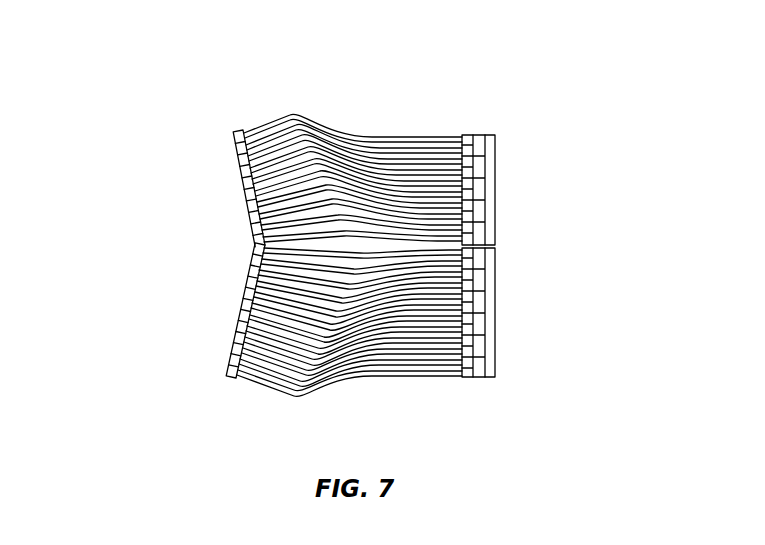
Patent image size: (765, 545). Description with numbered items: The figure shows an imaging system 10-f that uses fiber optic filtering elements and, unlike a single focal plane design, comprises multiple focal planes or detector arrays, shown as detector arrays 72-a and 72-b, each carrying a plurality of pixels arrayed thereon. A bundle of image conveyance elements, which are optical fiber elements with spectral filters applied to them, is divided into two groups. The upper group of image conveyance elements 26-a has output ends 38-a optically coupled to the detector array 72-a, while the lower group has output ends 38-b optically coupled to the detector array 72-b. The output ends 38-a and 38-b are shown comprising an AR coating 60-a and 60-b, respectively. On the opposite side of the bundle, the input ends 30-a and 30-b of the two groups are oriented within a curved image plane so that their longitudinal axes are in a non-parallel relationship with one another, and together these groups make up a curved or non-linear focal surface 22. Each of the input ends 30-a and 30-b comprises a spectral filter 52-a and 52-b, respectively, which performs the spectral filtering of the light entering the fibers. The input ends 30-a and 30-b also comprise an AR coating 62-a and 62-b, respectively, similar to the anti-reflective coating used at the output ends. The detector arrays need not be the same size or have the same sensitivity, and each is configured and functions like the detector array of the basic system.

The imaging system 10-f is at (544, 60).
The focal surface 22 is at (118, 140).
The image conveyance elements 26-a is at (359, 124).
The input ends 30-a is at (268, 117).
The input ends 30-b is at (259, 392).
The output ends 38-a is at (443, 136).
The output ends 38-b is at (414, 379).
The spectral filter 52-a is at (250, 192).
The spectral filter 52-b is at (240, 328).
The AR coating 60-a is at (470, 135).
The AR coating 60-b is at (464, 378).
The AR coating 62-a is at (233, 133).
The AR coating 62-b is at (231, 373).
The detector array 72-a is at (505, 156).
The detector array 72-b is at (505, 345).